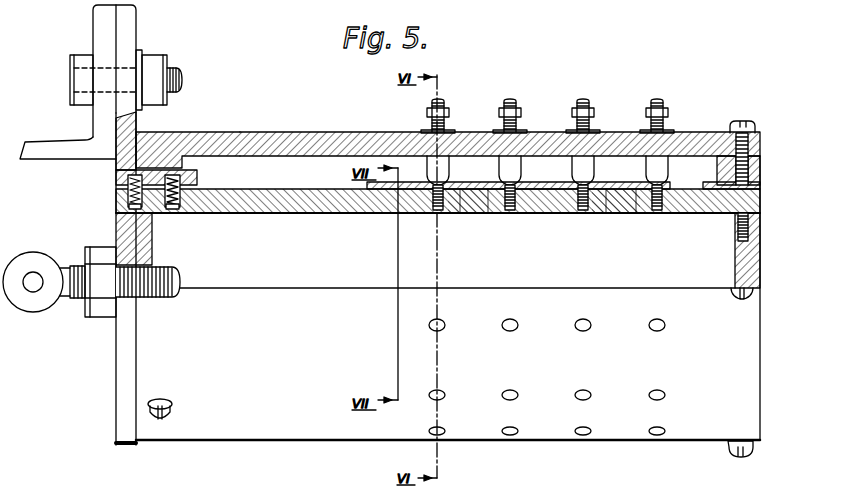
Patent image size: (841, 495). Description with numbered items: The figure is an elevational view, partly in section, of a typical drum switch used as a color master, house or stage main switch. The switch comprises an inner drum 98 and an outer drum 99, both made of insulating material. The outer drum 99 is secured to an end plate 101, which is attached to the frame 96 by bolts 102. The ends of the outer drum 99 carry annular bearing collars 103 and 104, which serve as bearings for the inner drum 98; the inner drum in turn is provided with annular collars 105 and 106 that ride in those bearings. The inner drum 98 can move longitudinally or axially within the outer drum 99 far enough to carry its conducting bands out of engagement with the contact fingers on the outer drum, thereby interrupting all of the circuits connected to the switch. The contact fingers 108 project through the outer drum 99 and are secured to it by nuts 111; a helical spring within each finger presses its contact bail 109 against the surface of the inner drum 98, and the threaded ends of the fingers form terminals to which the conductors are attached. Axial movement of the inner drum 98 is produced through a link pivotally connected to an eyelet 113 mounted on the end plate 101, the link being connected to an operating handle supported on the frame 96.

The frame 96 is at (95, 117).
The inner drum 98 is at (292, 214).
The outer drum 99 is at (279, 132).
The end plate 101 is at (118, 432).
The bolts 102 is at (172, 68).
The annular bearing collar 103 is at (172, 143).
The annular bearing collar 104 is at (727, 157).
The annular collar 105 is at (192, 172).
The annular collar 106 is at (715, 215).
The contact fingers 108 is at (450, 170).
The contact bails 109 is at (438, 185).
The nuts 111 is at (426, 126).
The eyelet 113 is at (33, 253).